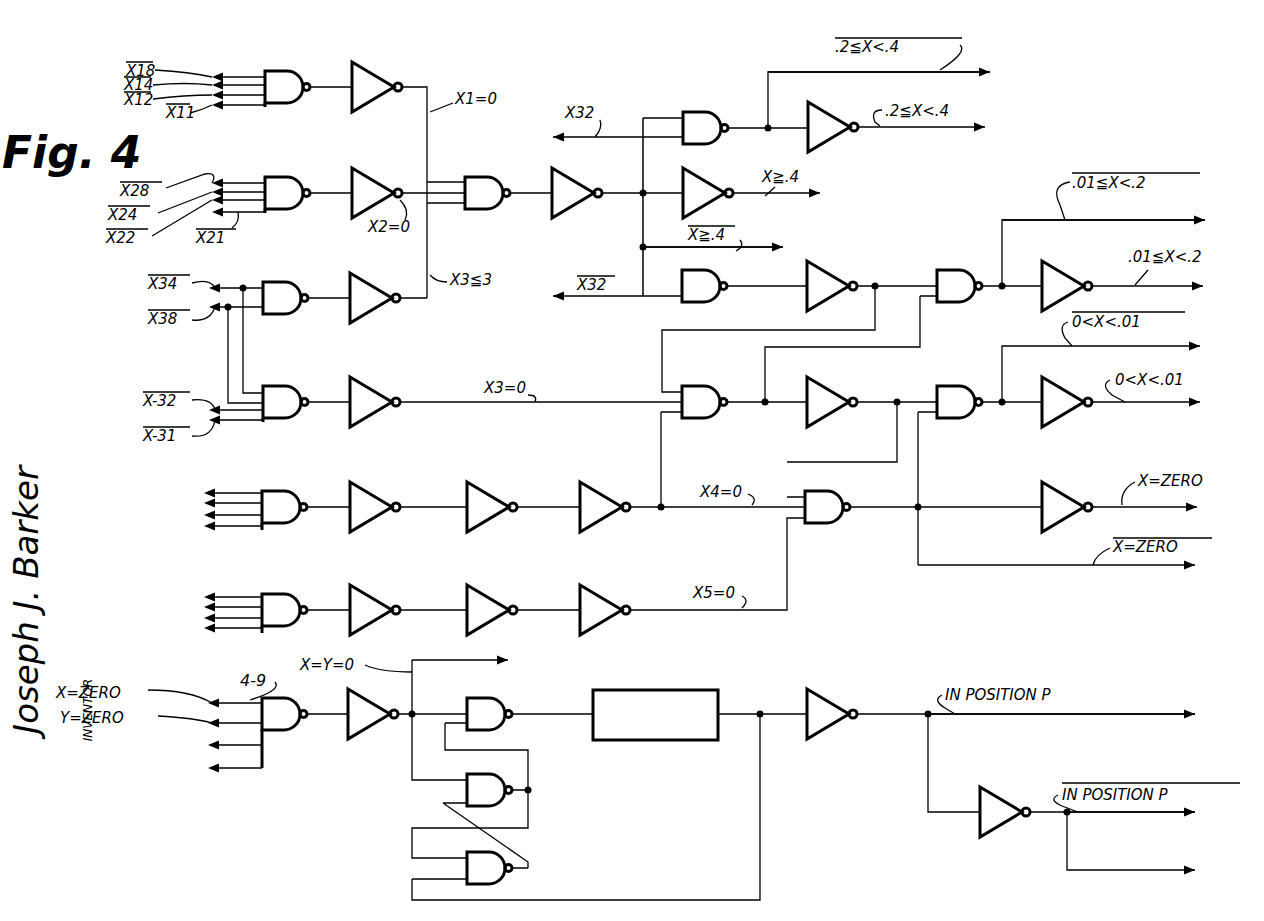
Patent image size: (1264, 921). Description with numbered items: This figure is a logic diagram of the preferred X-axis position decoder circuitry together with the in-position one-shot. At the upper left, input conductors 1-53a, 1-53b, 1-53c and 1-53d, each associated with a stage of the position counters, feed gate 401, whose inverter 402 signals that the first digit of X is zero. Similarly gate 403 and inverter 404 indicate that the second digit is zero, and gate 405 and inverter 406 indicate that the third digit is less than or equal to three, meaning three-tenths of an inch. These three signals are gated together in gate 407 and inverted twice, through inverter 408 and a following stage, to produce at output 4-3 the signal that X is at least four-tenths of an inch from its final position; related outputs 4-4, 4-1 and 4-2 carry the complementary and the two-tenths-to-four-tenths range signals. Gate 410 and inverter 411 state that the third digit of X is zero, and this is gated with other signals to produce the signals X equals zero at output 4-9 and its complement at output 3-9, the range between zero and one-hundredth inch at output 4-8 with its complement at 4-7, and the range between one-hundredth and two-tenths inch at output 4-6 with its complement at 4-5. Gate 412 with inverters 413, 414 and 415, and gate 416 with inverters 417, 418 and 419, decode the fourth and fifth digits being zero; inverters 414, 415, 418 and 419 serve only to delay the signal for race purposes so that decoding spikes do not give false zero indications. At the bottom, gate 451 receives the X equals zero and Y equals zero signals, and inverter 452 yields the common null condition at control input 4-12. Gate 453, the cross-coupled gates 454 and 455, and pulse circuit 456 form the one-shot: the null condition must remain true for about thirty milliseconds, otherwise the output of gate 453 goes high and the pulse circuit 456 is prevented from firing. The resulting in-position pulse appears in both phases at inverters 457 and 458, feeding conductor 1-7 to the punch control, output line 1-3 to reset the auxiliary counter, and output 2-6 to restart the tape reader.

The gate 401 is at (297, 72).
The inverter 402 is at (377, 70).
The gate 403 is at (278, 177).
The inverter 404 is at (405, 160).
The gate 405 is at (310, 266).
The inverter 406 is at (400, 266).
The gate 407 is at (497, 160).
The inverter 408 is at (578, 178).
The gate 410 is at (310, 370).
The inverter 411 is at (400, 370).
The gate 412 is at (312, 472).
The inverter 413 is at (402, 466).
The inverter 414 is at (525, 466).
The inverter 415 is at (628, 462).
The gate 416 is at (305, 576).
The inverter 417 is at (400, 574).
The inverter 418 is at (522, 572).
The inverter 419 is at (650, 572).
The gate 451 is at (290, 730).
The inverter 452 is at (375, 730).
The gate 453 is at (480, 700).
The gate 454 is at (467, 792).
The gate 455 is at (500, 880).
The pulse circuit 456 is at (688, 668).
The inverter 457 is at (885, 680).
The inverter 458 is at (1005, 825).
The input conductor 1-53a is at (242, 105).
The input conductor 1-53b is at (248, 96).
The input conductor 1-53c is at (240, 85).
The input conductor 1-53d is at (224, 76).
The output 4-1 is at (850, 73).
The output 4-2 is at (910, 128).
The output 4-3 is at (800, 197).
The output 4-4 is at (715, 250).
The output 4-5 is at (1178, 220).
The output 4-6 is at (1188, 290).
The output 4-7 is at (1170, 348).
The output 4-8 is at (1158, 407).
The output 4-9 is at (1168, 510).
The control input 4-12 is at (440, 712).
The output 3-9 is at (1160, 568).
The conductor 1-7 is at (1130, 716).
The output line 1-3 is at (1160, 814).
The output 2-6 is at (1135, 872).